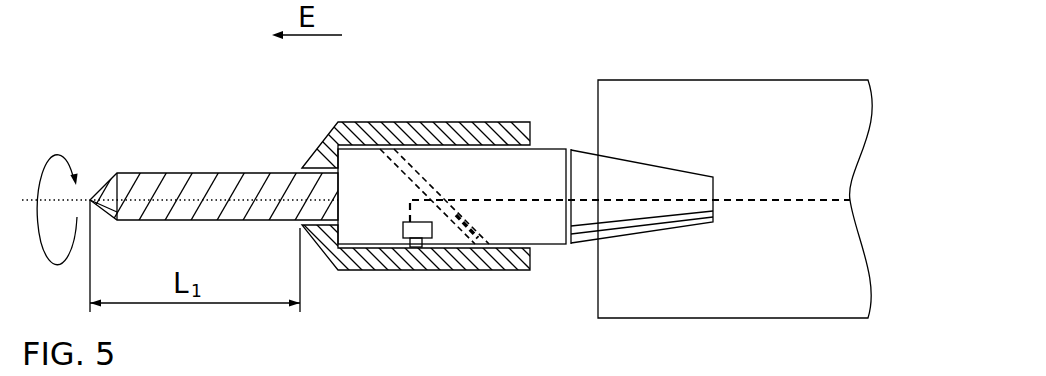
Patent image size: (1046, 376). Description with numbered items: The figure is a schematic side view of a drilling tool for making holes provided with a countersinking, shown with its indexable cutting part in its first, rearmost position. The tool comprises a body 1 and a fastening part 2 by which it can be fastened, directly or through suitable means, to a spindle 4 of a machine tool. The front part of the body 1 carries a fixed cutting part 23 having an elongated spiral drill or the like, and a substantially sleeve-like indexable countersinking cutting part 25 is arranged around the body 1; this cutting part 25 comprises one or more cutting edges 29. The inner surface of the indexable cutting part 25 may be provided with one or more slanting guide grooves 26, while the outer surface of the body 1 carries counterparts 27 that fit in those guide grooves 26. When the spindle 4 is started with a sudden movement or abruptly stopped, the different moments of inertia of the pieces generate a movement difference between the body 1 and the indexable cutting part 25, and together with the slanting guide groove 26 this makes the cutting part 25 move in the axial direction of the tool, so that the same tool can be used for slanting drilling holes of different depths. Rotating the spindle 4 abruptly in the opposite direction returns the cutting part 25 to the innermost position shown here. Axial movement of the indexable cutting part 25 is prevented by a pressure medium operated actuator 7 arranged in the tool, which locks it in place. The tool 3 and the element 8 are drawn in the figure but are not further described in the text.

The body 1 is at (493, 165).
The fastening part 2 is at (646, 152).
The tool unit 3 is at (231, 62).
The spindle 4 is at (690, 80).
The pressure medium operated actuator 7 is at (416, 247).
The signal line 8 is at (553, 203).
The fixed cutting part 23 is at (208, 174).
The indexable countersinking cutting part 25 is at (358, 132).
The slanting guide groove 26 is at (405, 167).
The counterpart 27 is at (470, 224).
The cutting edge 29 is at (318, 148).